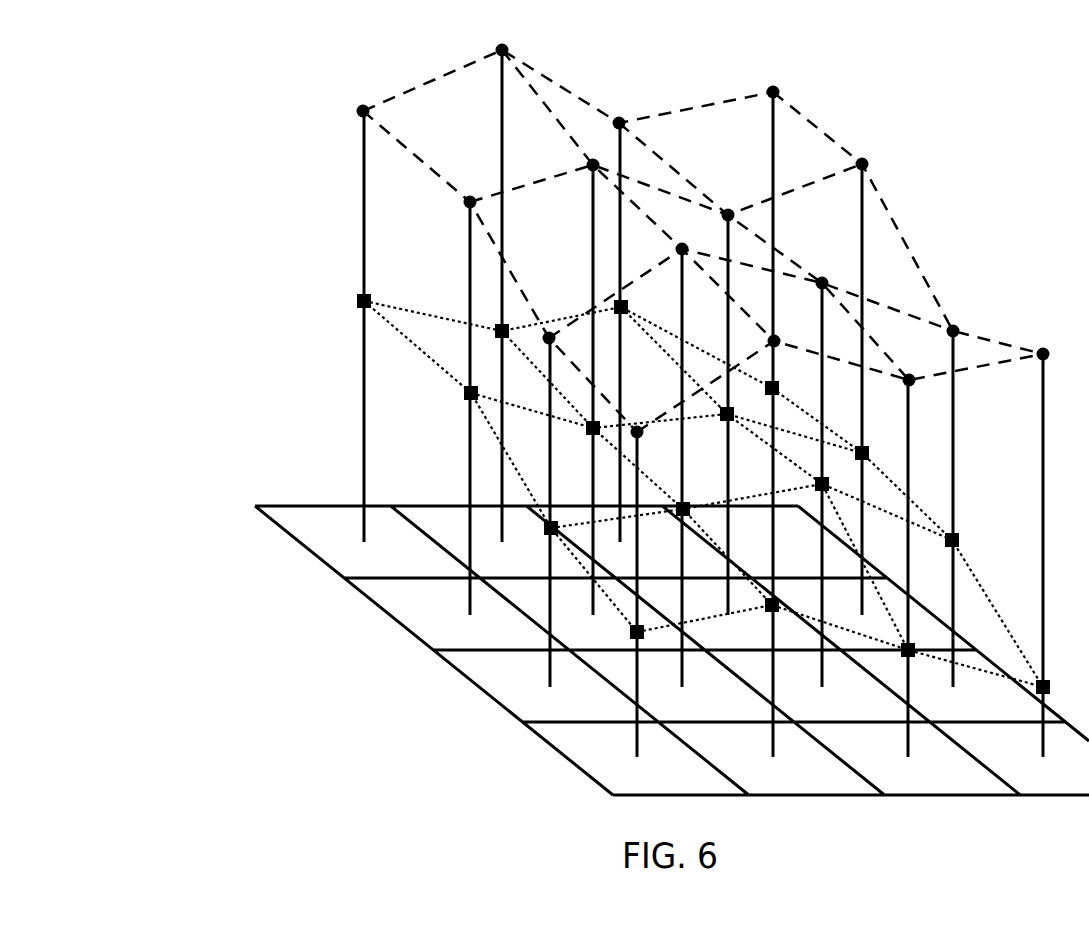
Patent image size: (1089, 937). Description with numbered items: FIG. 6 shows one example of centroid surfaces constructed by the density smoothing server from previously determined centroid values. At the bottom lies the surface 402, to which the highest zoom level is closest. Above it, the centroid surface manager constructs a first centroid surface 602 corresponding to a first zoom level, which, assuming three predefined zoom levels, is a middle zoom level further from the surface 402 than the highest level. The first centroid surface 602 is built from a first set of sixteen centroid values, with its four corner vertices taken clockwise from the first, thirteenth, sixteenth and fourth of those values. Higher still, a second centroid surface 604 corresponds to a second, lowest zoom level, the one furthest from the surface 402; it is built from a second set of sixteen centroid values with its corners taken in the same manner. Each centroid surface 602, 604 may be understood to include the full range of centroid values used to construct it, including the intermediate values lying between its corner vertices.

The surface 402 is at (227, 505).
The first centroid surface 602 is at (427, 355).
The second centroid surface 604 is at (422, 157).